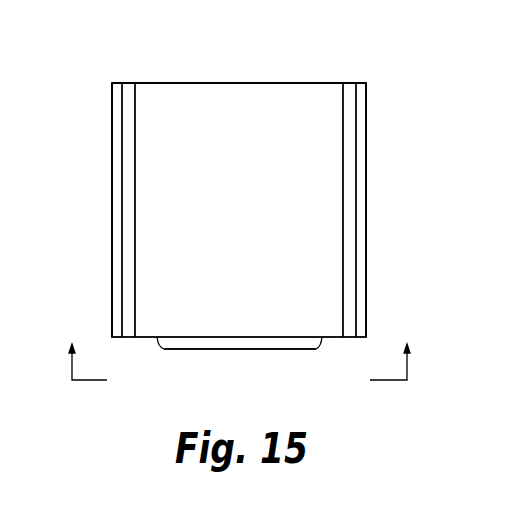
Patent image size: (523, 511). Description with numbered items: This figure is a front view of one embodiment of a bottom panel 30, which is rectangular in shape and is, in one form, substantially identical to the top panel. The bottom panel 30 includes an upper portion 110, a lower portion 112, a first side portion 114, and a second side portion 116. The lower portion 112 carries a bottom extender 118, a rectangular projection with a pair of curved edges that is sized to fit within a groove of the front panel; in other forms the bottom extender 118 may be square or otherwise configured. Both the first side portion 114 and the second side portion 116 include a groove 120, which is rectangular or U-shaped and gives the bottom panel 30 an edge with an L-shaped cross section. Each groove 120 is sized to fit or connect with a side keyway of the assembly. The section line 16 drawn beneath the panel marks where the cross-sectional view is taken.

The grip member 30 is at (366, 147).
The top wall 110 is at (204, 98).
The bottom lip 112 is at (197, 313).
The right side wall 114 is at (366, 203).
The left side wall 116 is at (112, 190).
The lip bottom edge 118 is at (203, 343).
The side flange 120 is at (128, 328).
The section line 16- 16 is at (239, 382).